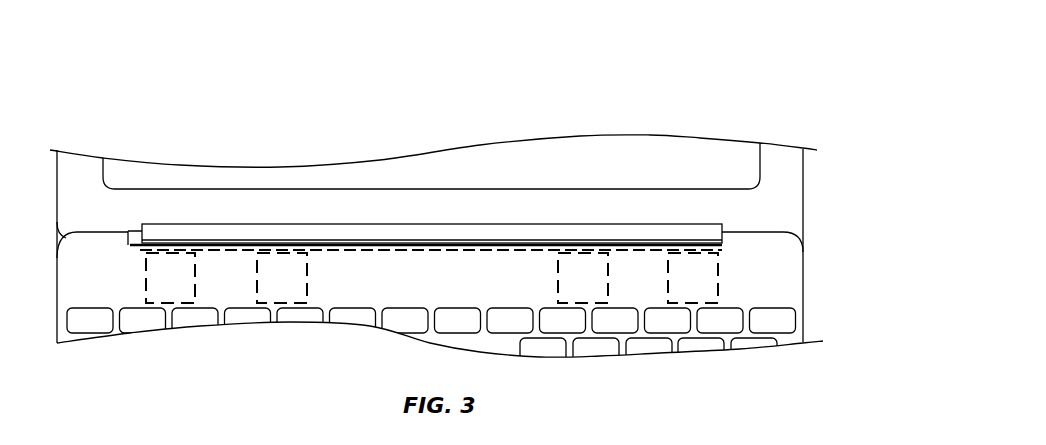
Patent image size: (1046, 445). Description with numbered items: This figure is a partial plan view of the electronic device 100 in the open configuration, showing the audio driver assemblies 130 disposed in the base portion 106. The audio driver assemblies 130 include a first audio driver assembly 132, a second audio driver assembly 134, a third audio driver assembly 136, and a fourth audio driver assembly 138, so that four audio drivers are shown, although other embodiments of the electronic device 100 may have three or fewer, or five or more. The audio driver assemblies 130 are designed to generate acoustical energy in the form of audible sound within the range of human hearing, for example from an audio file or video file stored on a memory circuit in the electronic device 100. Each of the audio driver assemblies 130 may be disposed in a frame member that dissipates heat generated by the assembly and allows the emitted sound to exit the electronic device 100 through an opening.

The electronic device 100 is at (740, 71).
The base portion 106 is at (58, 267).
The audio driver assemblies 130 is at (187, 102).
The first audio driver assembly 132 is at (195, 271).
The second audio driver assembly 134 is at (257, 271).
The third audio driver assembly 136 is at (608, 296).
The fourth audio driver assembly 138 is at (667, 281).